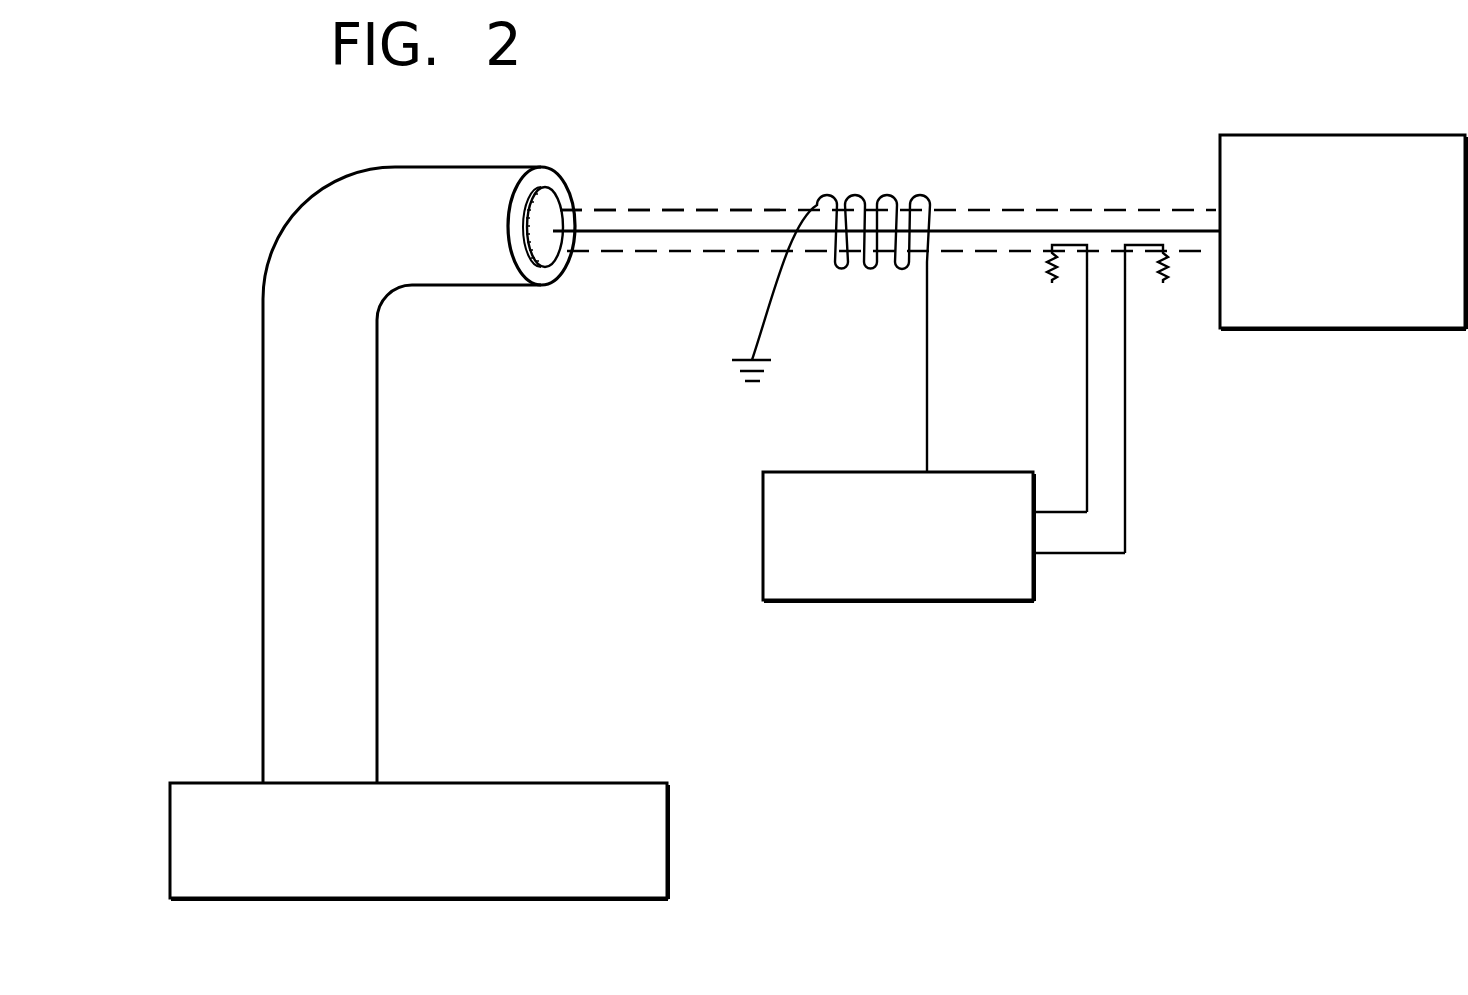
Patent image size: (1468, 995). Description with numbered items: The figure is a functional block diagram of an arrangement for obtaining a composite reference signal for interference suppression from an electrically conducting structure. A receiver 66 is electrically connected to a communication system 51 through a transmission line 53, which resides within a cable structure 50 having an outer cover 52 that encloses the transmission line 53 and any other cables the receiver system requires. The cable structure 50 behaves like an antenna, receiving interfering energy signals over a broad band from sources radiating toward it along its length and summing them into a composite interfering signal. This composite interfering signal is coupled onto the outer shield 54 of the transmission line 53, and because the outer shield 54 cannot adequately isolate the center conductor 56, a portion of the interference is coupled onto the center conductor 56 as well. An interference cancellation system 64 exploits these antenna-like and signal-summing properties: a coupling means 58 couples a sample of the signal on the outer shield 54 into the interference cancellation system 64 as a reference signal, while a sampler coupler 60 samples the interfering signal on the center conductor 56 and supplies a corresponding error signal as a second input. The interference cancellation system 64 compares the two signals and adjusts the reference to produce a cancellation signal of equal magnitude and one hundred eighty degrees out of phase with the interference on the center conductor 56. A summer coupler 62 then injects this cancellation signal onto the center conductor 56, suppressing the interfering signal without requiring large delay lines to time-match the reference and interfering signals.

The cable structure 50 is at (364, 575).
The communication system 51 is at (667, 827).
The outer cover 52 is at (547, 287).
The transmission line 53 is at (1042, 175).
The outer shield 54 is at (707, 205).
The center conductor 56 is at (693, 233).
The coupling means 58 is at (925, 207).
The sampler coupler 60 is at (1070, 247).
The summer coupler 62 is at (1148, 247).
The interference cancellation system 64 is at (993, 600).
The receiver 66 is at (1352, 328).